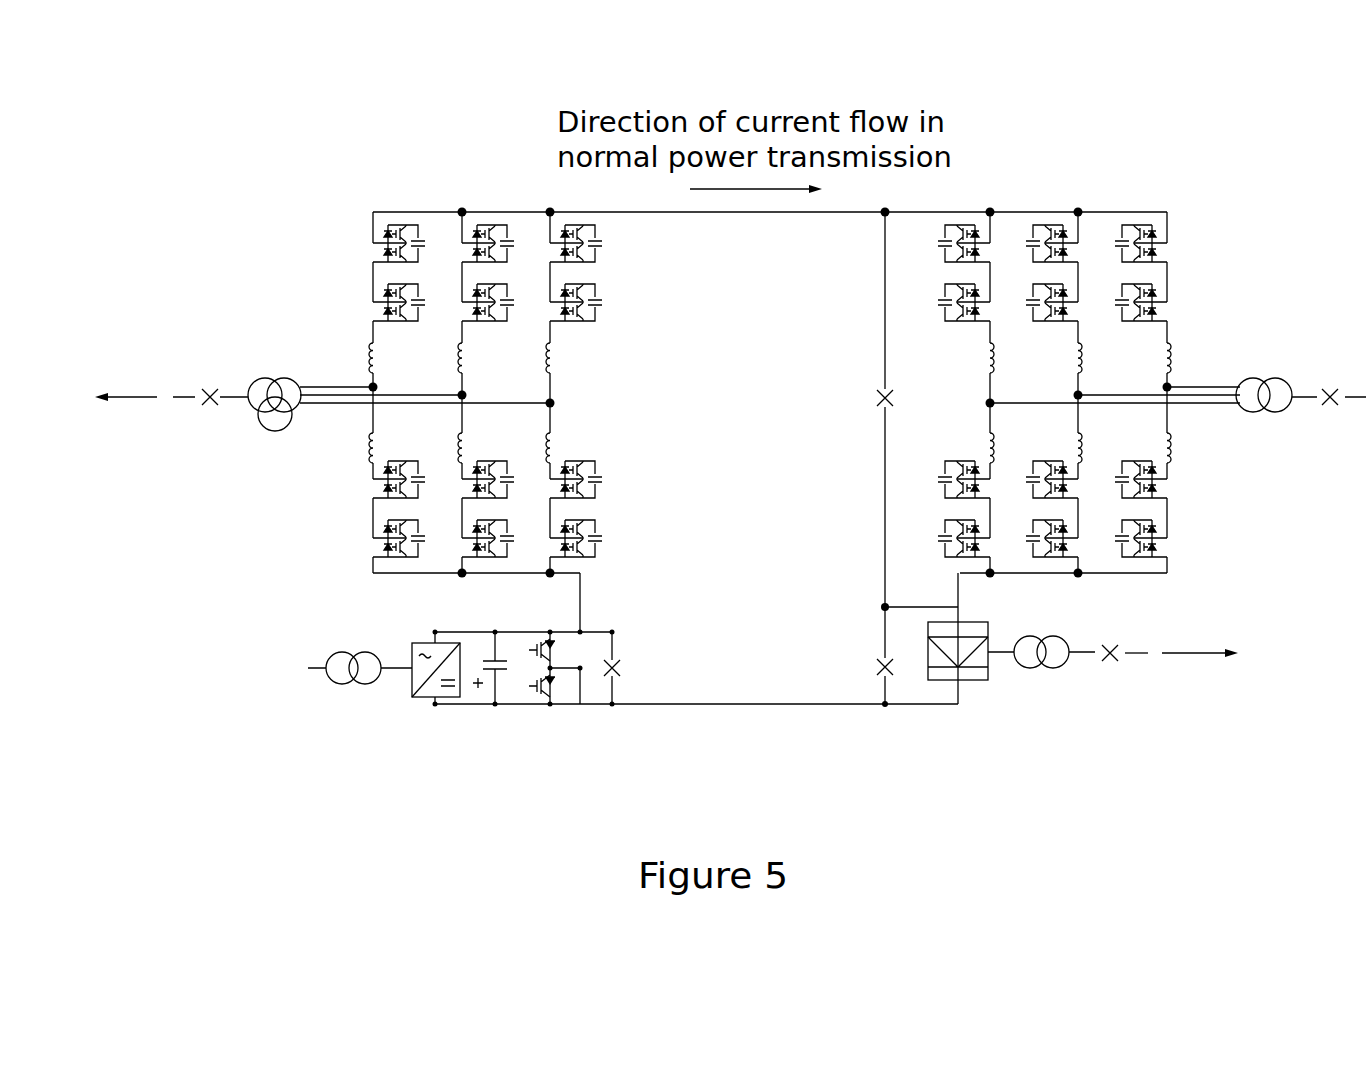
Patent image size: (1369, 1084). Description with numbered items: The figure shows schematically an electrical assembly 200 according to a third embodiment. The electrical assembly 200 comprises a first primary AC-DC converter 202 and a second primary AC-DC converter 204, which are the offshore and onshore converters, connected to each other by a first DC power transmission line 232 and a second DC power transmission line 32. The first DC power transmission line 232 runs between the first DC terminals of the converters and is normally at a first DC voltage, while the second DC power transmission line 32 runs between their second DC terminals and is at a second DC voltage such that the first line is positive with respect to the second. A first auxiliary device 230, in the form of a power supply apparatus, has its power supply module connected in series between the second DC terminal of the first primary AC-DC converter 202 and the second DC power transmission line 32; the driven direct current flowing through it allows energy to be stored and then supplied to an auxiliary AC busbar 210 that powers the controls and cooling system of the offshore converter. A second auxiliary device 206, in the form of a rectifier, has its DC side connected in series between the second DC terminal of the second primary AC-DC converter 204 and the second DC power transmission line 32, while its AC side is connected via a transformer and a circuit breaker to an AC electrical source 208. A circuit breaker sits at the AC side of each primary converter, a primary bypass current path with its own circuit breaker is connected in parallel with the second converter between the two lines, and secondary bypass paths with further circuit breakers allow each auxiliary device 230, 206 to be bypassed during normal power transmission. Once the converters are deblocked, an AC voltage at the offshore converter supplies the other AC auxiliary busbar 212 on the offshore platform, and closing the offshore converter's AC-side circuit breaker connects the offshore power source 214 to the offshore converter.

The electrical assembly 200 is at (255, 178).
The first primary AC-DC converter 202 is at (438, 237).
The second primary AC-DC converter 204 is at (1010, 228).
The second auxiliary device 206 is at (983, 662).
The AC electrical source 208 is at (1234, 658).
The auxiliary AC busbar 210 is at (331, 669).
The AC auxiliary busbar 212 is at (275, 431).
The offshore power source 214 is at (97, 398).
The first auxiliary device 230 is at (510, 688).
The first DC power transmission line 232 is at (737, 224).
The second DC power transmission line 32 is at (728, 692).